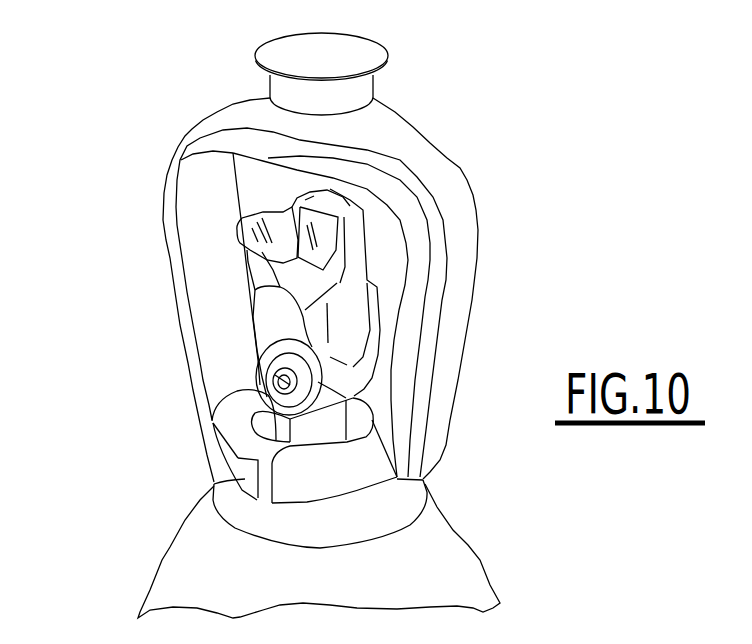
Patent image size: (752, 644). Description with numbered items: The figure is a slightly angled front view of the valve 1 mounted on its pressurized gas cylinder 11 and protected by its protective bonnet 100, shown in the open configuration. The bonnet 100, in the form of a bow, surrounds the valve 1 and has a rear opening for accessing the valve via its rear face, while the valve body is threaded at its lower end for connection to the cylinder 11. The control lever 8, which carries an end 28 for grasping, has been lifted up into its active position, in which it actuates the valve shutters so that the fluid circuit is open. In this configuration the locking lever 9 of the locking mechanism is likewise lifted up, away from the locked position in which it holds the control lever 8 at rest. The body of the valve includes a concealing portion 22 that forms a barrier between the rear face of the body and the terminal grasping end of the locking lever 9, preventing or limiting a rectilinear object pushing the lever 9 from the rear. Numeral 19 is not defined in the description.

The protective bonnet 100 is at (172, 148).
The pressurized gas cylinder 11 is at (450, 565).
The valve 1 is at (332, 261).
The concealing portion 22 is at (390, 300).
The control lever 8 is at (240, 235).
The locking lever 9 is at (410, 189).
The cap 19 is at (343, 215).
The end for grasping 28 is at (251, 260).